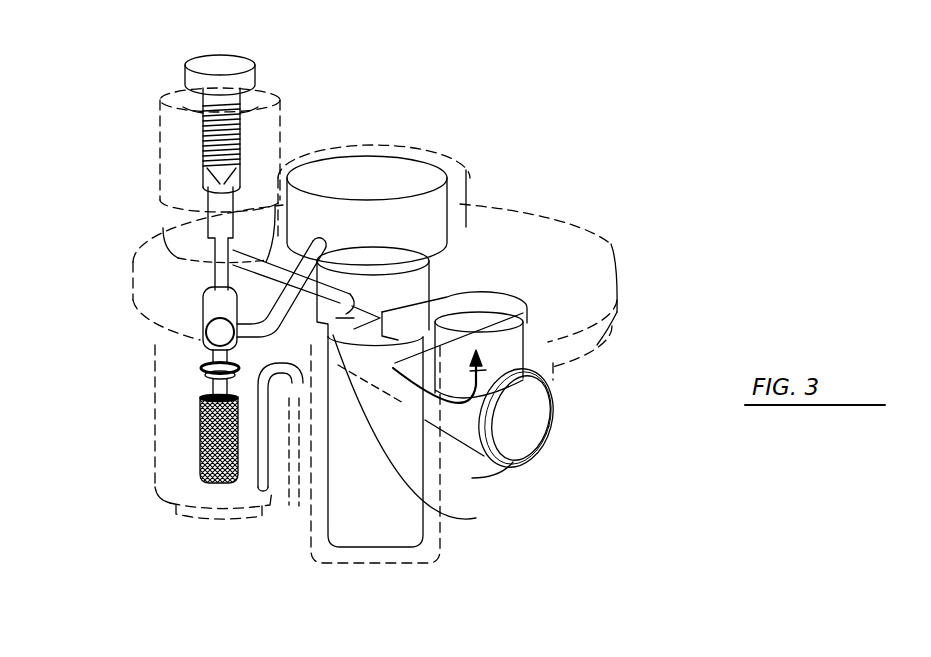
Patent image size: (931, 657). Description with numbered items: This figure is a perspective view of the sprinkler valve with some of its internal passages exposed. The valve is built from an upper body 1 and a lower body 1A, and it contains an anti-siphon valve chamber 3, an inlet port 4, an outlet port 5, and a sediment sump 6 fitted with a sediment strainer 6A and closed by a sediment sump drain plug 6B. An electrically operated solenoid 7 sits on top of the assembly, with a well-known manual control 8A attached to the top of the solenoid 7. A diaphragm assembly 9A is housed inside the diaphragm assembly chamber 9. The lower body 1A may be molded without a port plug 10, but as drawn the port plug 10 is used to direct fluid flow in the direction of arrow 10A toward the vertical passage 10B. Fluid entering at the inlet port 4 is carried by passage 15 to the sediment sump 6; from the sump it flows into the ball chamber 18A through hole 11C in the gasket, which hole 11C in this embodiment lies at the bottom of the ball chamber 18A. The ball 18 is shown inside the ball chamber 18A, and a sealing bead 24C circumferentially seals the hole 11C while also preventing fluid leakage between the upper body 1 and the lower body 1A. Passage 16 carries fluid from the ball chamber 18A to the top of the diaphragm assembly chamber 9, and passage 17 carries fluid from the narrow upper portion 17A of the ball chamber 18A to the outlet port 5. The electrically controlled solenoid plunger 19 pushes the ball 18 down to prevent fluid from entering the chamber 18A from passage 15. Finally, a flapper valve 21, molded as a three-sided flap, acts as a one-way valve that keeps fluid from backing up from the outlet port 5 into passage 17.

The upper body 1 is at (612, 240).
The lower body 1A is at (612, 350).
The anti-siphon valve chamber 3 is at (410, 289).
The inlet port 4 is at (299, 512).
The outlet port 5 is at (386, 548).
The sediment sump 6 is at (152, 498).
The sediment strainer 6A is at (200, 426).
The sediment sump drain plug 6B is at (186, 527).
The electrically operated solenoid 7 is at (200, 139).
The manual control 8A is at (205, 63).
The diaphragm assembly chamber 9 is at (470, 165).
The diaphragm assembly 9A is at (415, 181).
The port plug 10 is at (522, 436).
The arrow 10A is at (549, 403).
The vertical passage 10B is at (523, 313).
The hole 11C is at (188, 366).
The passage 15 is at (264, 490).
The passage 16 is at (313, 240).
The passage 17 is at (268, 341).
The narrow upper portion 17A is at (208, 249).
The ball 18 is at (206, 334).
The ball chamber 18A is at (205, 301).
The solenoid plunger 19 is at (207, 211).
The flapper valve 21 is at (420, 433).
The sealing bead 24C is at (203, 376).